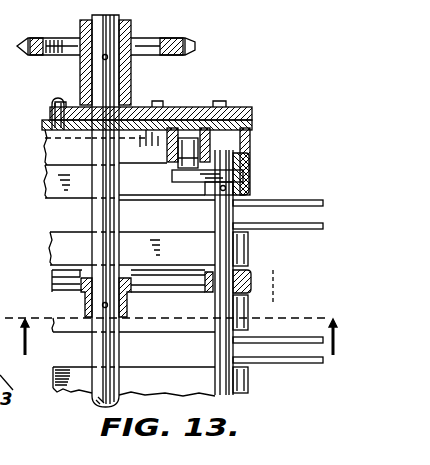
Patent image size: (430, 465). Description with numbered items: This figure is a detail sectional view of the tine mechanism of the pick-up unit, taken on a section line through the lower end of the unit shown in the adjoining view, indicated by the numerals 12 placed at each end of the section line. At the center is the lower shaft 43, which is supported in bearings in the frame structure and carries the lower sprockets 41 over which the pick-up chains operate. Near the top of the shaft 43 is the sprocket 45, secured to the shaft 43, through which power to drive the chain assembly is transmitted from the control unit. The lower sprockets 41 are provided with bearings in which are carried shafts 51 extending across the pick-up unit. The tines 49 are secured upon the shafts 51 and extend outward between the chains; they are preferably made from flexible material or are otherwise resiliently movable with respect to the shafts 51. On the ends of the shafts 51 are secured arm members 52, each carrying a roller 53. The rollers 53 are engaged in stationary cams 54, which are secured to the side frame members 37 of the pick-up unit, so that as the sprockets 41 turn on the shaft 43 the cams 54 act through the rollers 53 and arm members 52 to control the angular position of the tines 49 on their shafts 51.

The lower shaft 43 is at (104, 33).
The sprocket 45 is at (190, 38).
The stationary cam 54 is at (190, 107).
The roller 53 is at (0, 240).
The side frame member 37 is at (250, 130).
The arm member 52 is at (251, 154).
The tine 49 is at (291, 223).
The lower sprocket 41 is at (248, 282).
The shaft 51 is at (215, 347).
The section line 12 is at (172, 325).